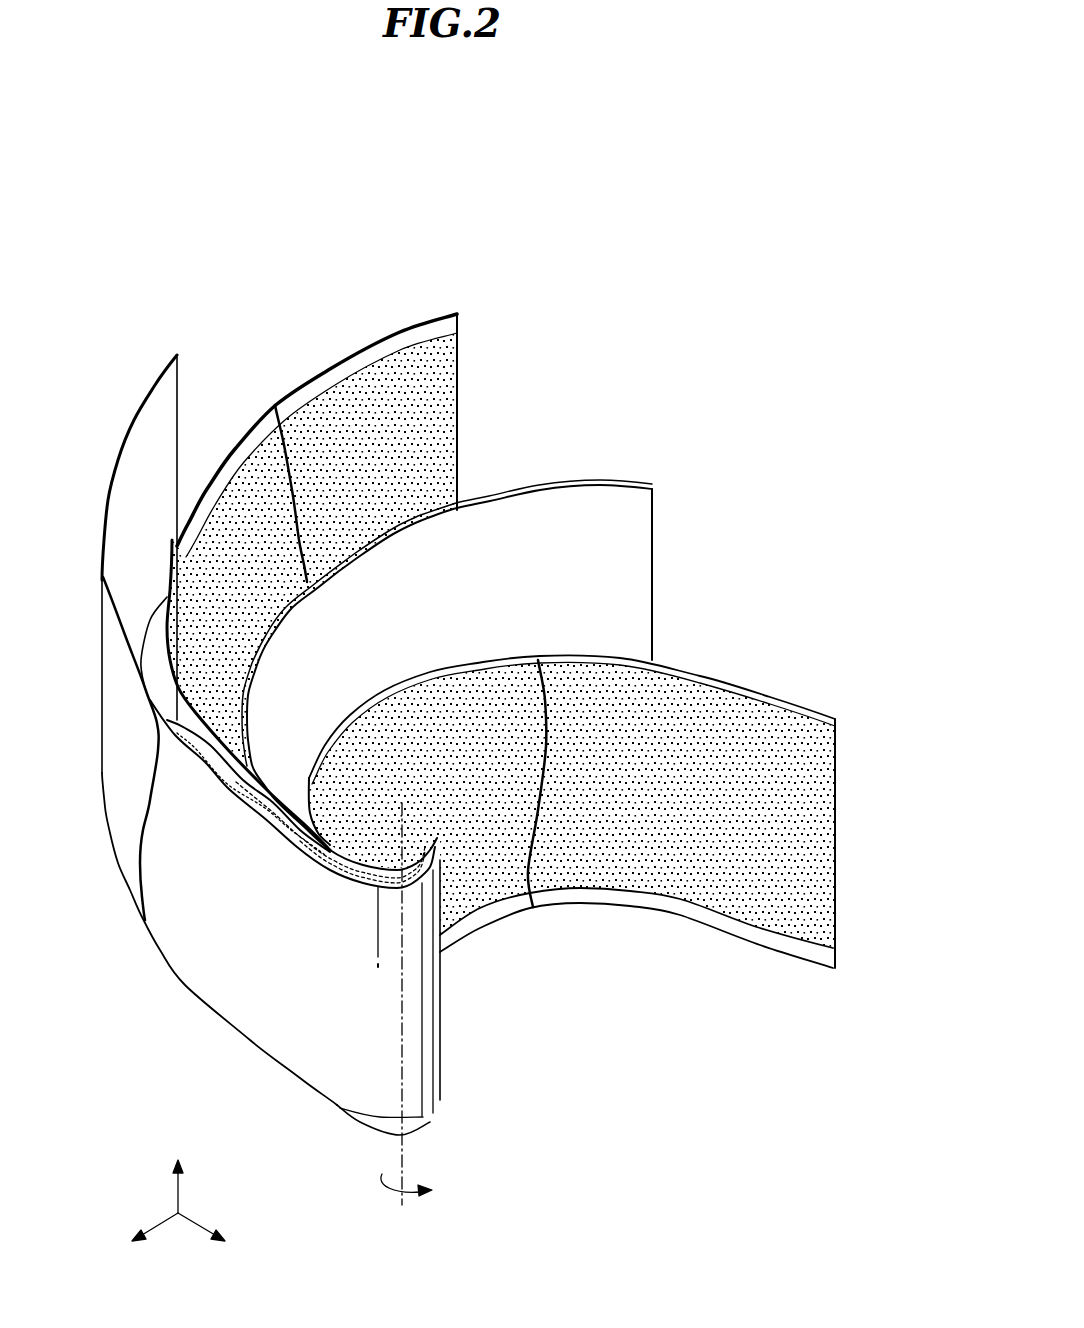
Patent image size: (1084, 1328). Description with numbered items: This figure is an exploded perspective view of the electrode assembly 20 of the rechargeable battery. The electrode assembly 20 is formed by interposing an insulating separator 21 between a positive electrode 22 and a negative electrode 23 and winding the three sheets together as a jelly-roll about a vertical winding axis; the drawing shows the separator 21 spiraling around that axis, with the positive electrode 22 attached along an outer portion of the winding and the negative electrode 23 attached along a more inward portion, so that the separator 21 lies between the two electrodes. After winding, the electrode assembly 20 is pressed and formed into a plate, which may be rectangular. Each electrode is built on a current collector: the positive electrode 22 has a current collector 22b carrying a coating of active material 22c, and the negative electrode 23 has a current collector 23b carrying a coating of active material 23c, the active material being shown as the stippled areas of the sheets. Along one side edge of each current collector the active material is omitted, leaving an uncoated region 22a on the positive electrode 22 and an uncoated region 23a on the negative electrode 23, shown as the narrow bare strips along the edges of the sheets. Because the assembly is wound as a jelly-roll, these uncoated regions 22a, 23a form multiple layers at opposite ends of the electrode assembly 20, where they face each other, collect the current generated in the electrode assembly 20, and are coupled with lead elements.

The electrode assembly 20 is at (791, 328).
The separator 21 is at (652, 491).
The positive electrode 22 is at (359, 501).
The uncoated region of positive electrode 22a is at (384, 348).
The current collector 22b is at (458, 410).
The active material 22c is at (430, 463).
The negative electrode 23 is at (613, 802).
The uncoated region of negative electrode 23a is at (697, 913).
The current collector 23b is at (838, 777).
The active material 23c is at (728, 712).